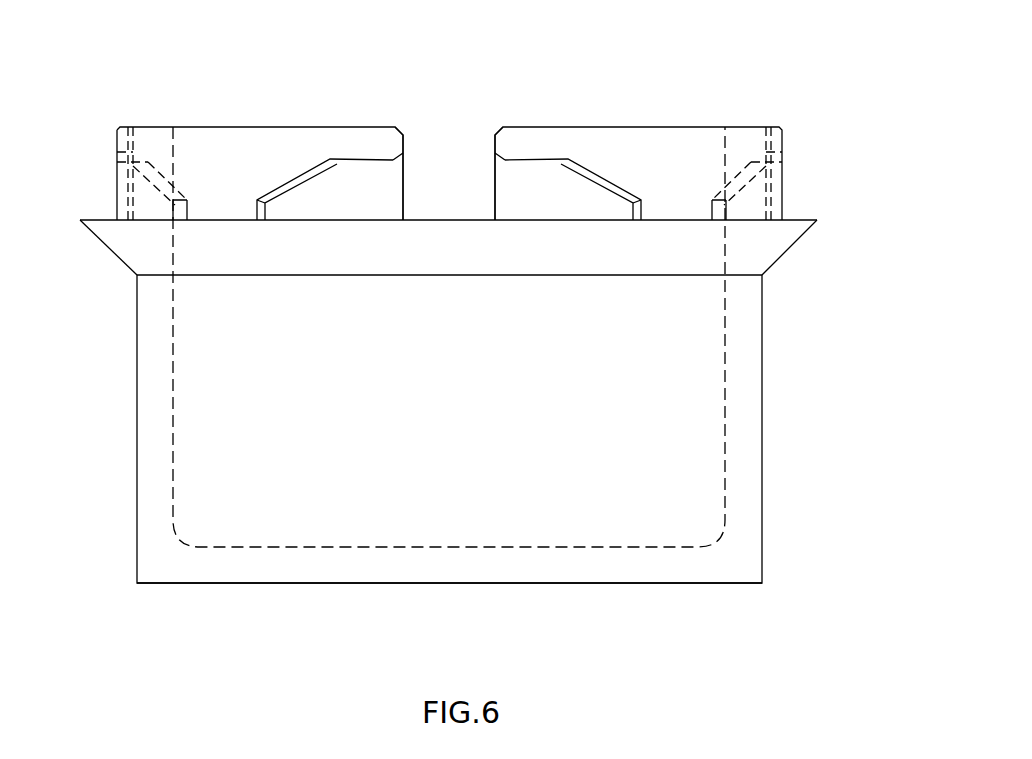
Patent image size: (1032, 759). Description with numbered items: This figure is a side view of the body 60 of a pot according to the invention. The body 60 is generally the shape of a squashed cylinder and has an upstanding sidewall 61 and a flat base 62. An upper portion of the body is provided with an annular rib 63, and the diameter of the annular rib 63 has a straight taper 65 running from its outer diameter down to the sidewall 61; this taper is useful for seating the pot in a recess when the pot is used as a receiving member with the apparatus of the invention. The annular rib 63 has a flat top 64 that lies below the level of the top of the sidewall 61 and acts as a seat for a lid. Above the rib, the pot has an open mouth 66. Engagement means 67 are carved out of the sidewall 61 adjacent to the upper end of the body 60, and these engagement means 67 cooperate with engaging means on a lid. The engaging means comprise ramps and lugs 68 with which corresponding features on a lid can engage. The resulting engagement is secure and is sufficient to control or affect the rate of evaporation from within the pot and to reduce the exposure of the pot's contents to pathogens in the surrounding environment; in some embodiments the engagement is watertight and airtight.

The body 60 is at (473, 346).
The upstanding sidewall 61 is at (155, 388).
The flat base 62 is at (592, 583).
The annular rib 63 is at (496, 234).
The flat top 64 is at (793, 218).
The straight taper 65 is at (775, 262).
The open mouth 66 is at (488, 105).
The engagement means 67 is at (285, 183).
The ramps and lugs 68 is at (495, 143).